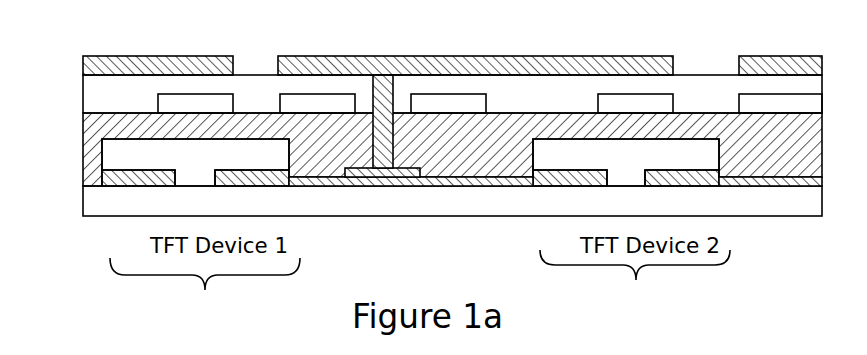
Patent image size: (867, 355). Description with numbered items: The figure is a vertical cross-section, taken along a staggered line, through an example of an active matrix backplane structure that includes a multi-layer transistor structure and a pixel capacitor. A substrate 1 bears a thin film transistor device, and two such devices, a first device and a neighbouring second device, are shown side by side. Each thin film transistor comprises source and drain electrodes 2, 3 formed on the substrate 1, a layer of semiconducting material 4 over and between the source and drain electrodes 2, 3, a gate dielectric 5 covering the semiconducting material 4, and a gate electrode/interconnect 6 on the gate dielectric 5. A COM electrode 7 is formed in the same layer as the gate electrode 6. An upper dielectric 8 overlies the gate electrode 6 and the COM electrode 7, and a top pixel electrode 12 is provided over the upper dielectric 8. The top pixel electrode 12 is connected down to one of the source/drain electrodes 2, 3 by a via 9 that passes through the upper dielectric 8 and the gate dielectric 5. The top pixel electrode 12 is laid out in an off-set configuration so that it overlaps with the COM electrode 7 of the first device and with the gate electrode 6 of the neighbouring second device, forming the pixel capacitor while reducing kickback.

The substrate 1 is at (83, 205).
The source/drain electrode 2 is at (250, 178).
The source/drain electrode 3 is at (110, 177).
The layer of semiconducting material 4 is at (130, 150).
The gate dielectric 5 is at (100, 121).
The gate electrode/interconnect 6 is at (177, 103).
The COM electrode 7 is at (290, 103).
The upper dielectric 8 is at (102, 83).
The via 9 is at (383, 90).
The top pixel electrode 12 is at (147, 56).